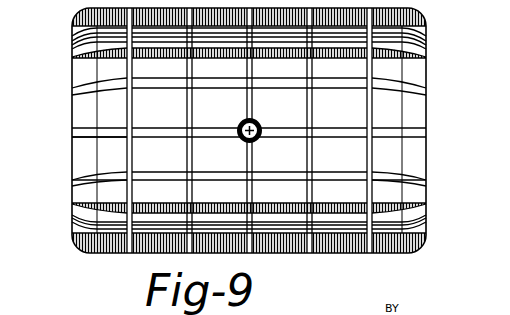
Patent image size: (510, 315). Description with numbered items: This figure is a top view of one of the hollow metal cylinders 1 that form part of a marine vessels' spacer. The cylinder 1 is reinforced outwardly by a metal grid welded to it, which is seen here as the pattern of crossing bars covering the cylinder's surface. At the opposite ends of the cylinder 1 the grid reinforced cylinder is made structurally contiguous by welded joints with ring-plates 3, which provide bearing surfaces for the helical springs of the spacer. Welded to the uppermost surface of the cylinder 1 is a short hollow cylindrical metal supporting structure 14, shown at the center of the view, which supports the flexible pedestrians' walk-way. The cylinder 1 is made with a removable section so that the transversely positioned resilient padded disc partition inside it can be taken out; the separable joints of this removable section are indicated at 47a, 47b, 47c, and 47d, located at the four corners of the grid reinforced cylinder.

The hollow cylinder 1 is at (112, 71).
The ring-plate 3 is at (77, 107).
The short hollow cylindrical metal supporting structure 14 is at (259, 124).
The separable joint 47a is at (88, 11).
The separable joint 47b is at (77, 243).
The separable joint 47c is at (132, 152).
The separable joint 47d is at (370, 155).